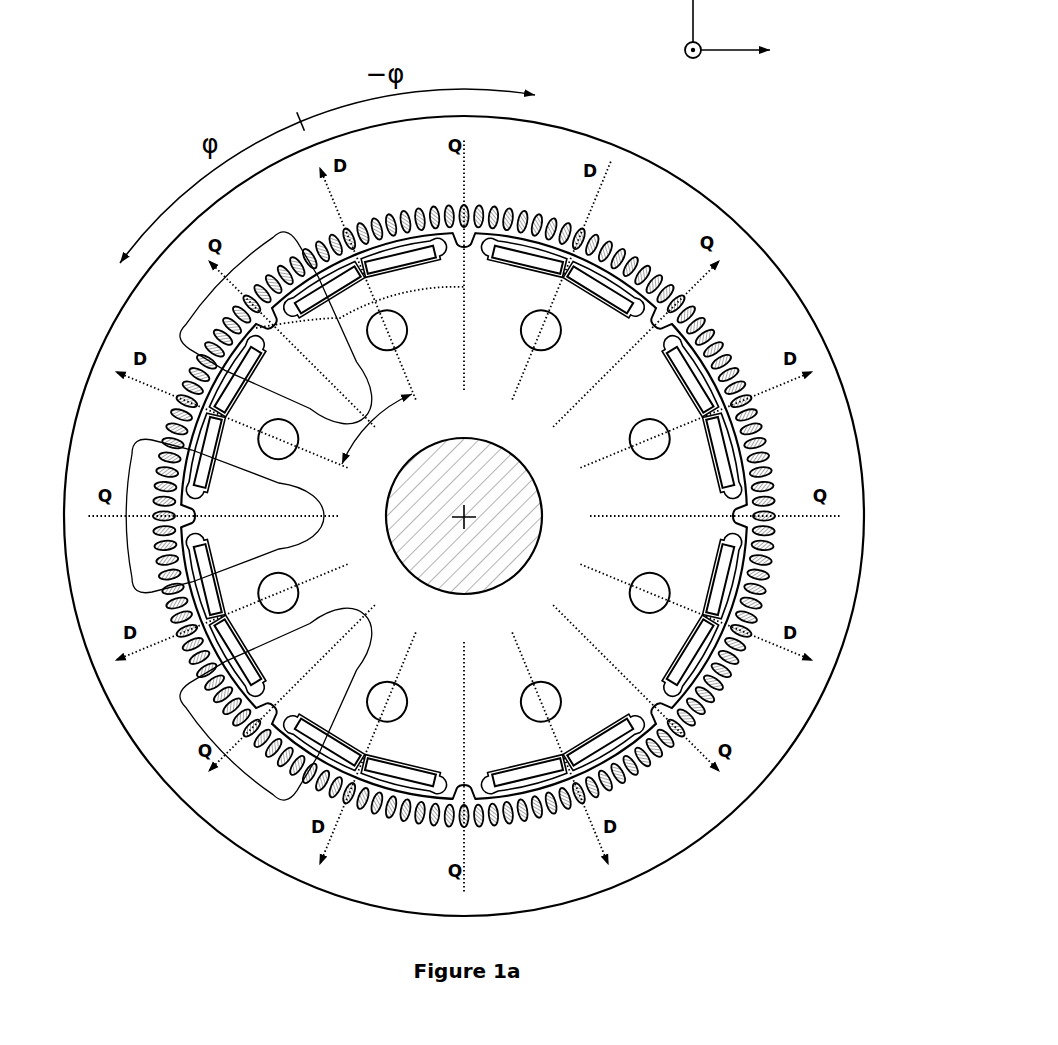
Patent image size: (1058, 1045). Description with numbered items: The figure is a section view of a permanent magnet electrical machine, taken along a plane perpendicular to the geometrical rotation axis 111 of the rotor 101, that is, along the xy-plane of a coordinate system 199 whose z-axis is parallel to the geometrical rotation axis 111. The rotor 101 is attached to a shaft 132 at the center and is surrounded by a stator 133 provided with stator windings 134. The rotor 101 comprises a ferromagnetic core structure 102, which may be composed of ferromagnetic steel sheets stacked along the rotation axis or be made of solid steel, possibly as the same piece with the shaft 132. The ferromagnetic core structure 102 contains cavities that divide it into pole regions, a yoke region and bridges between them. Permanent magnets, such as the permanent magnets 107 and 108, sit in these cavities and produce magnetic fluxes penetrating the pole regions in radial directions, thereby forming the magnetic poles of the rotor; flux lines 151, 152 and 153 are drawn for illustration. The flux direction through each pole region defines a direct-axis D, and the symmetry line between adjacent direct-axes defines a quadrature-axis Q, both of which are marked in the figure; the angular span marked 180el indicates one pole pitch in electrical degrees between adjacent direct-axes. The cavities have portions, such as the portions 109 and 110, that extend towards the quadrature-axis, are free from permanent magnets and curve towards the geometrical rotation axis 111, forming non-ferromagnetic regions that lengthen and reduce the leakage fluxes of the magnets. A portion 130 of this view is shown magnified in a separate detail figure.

The rotor 101 is at (464, 451).
The ferromagnetic core structure 102 is at (470, 427).
The permanent magnet 107 is at (379, 261).
The permanent magnet 108 is at (378, 266).
The portion of cavity 109 is at (305, 330).
The portion of cavity 110 is at (462, 241).
The geometrical rotation axis 111 is at (468, 517).
The portion 130 is at (433, 296).
The shaft 132 is at (446, 480).
The stator 133 is at (773, 280).
The stator windings 134 is at (618, 243).
The flux line 151 is at (258, 242).
The flux line 152 is at (141, 465).
The flux line 153 is at (206, 708).
The electrical pole pitch 180el is at (377, 429).
The coordinate system 199 is at (667, 12).